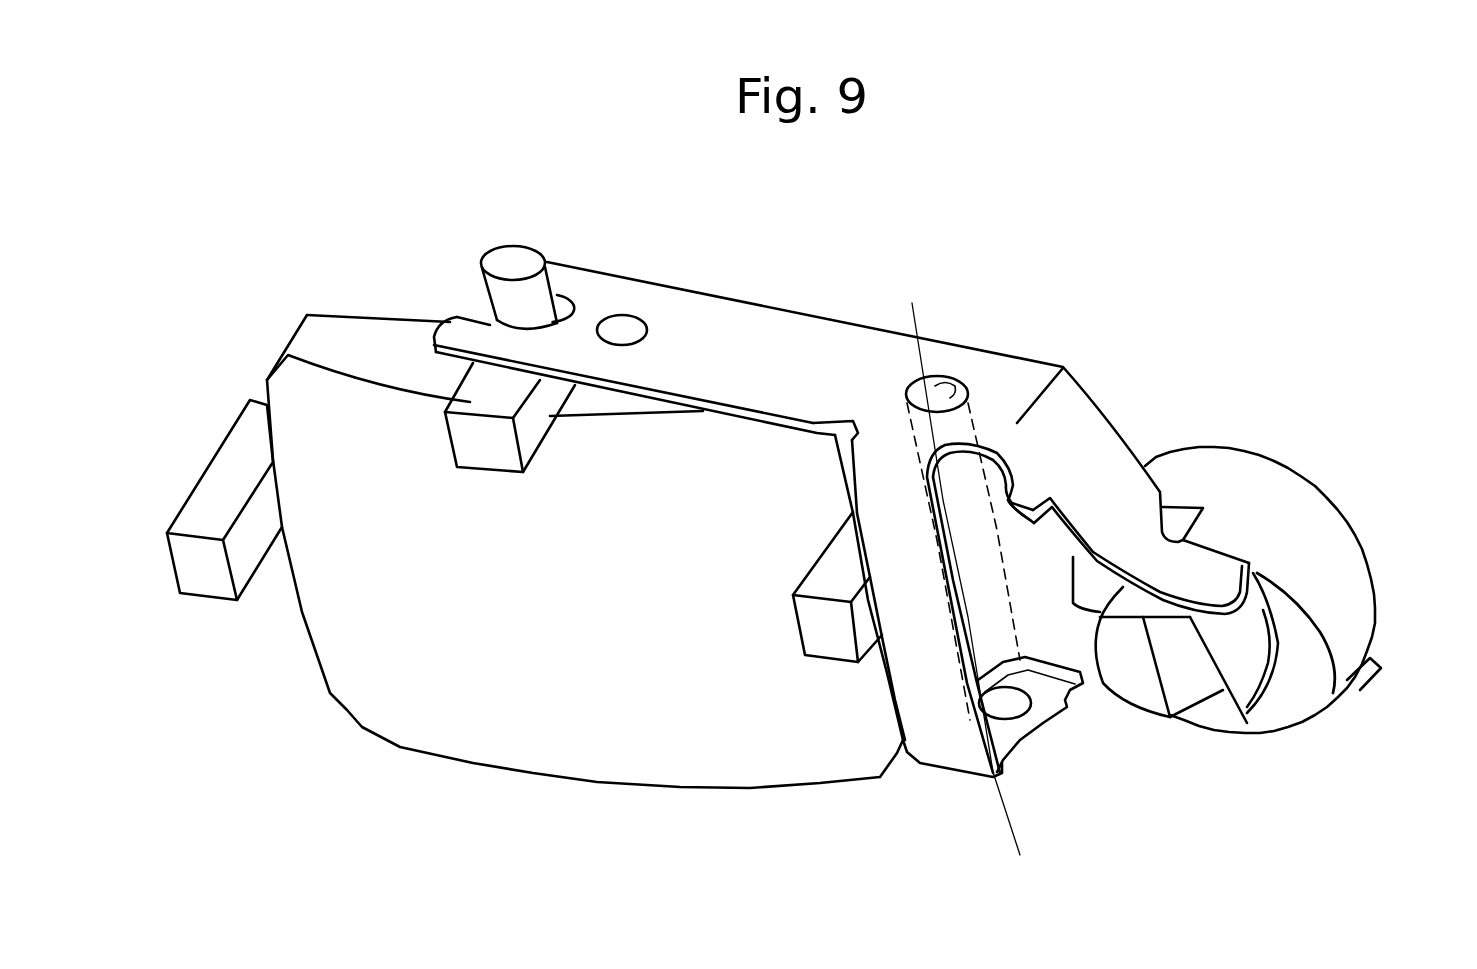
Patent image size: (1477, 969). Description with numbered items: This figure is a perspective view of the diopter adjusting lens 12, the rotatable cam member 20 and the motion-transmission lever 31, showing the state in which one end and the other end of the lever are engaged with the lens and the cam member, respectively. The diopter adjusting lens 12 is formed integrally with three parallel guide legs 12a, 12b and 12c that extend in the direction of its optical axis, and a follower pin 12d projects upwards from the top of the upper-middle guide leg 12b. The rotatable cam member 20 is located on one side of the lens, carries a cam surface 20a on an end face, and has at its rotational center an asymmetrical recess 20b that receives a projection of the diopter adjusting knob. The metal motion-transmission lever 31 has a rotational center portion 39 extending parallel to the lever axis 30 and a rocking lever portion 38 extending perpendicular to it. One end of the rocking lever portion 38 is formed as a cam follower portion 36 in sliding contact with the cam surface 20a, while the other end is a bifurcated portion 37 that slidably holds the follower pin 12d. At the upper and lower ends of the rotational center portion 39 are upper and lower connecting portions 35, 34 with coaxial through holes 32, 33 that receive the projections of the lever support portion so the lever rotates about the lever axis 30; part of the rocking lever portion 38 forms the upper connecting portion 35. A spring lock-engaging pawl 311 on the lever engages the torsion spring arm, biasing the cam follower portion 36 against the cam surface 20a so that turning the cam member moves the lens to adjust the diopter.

The diopter adjusting lens 12 is at (608, 737).
The guide leg 12a is at (200, 497).
The guide leg 12b is at (477, 385).
The guide leg 12c is at (827, 640).
The follower pin 12d is at (518, 258).
The rotatable cam member 20 is at (1357, 577).
The cam surface 20a is at (1286, 713).
The asymmetrical recess 20b is at (1185, 683).
The lever axis 30 is at (917, 312).
The motion-transmission lever 31 is at (838, 350).
The spring lock-engaging pawl 311 is at (1033, 533).
The upper coaxial through hole 32 is at (960, 382).
The lower coaxial through hole 33 is at (1043, 733).
The lower connecting portion 34 is at (1053, 703).
The upper connecting portion 35 is at (937, 350).
The cam follower portion 36 is at (1253, 570).
The bifurcated portion 37 is at (565, 302).
The rocking lever portion 38 is at (758, 318).
The rotational center portion 39 is at (927, 733).